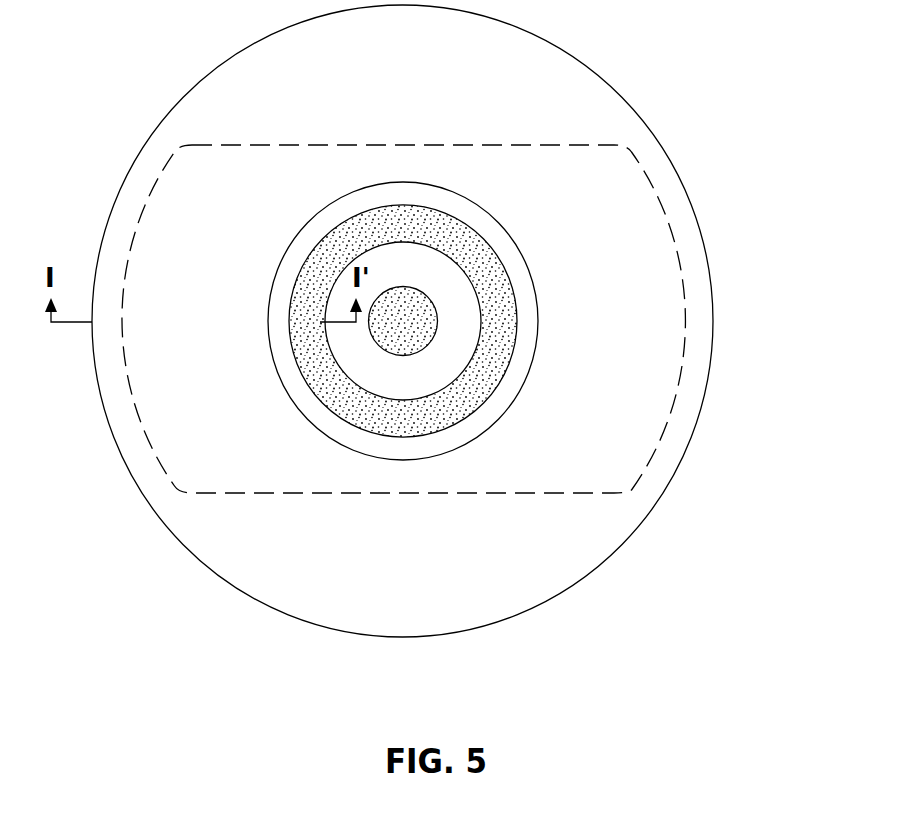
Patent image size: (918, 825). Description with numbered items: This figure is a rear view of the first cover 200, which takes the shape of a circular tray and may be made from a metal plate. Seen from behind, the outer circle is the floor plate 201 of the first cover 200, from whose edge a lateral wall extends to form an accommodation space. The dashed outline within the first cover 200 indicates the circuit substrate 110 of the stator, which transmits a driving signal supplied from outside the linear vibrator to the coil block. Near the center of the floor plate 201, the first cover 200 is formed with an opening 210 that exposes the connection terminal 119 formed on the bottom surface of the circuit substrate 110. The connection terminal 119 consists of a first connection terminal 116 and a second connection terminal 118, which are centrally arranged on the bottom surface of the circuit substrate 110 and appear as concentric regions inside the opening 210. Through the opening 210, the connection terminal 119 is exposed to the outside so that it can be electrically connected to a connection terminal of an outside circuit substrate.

The circuit substrate 110 is at (248, 145).
The first connection terminal 116 is at (507, 308).
The second connection terminal 118 is at (423, 310).
The connection terminal 119 is at (558, 289).
The first cover 200 is at (402, 341).
The floor plate 201 is at (547, 562).
The opening 210 is at (511, 373).